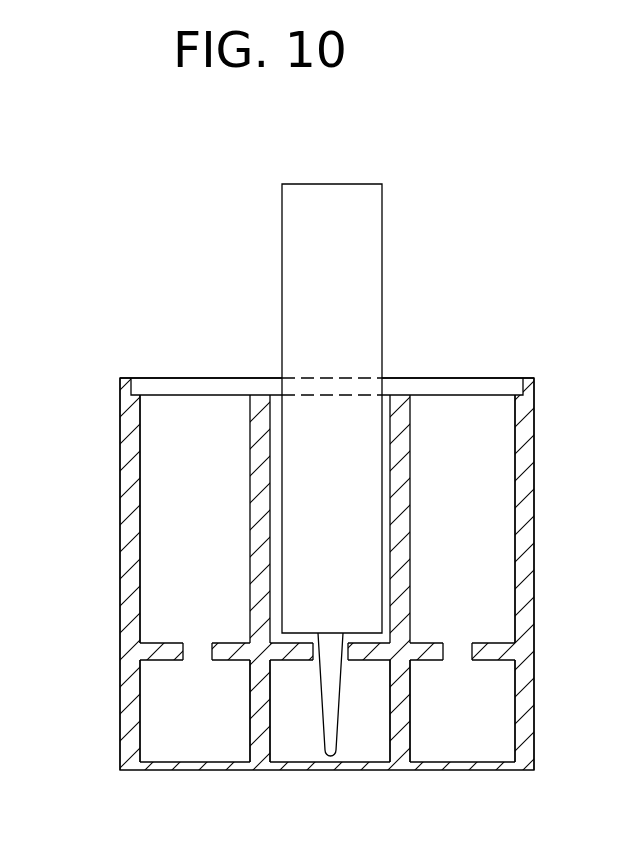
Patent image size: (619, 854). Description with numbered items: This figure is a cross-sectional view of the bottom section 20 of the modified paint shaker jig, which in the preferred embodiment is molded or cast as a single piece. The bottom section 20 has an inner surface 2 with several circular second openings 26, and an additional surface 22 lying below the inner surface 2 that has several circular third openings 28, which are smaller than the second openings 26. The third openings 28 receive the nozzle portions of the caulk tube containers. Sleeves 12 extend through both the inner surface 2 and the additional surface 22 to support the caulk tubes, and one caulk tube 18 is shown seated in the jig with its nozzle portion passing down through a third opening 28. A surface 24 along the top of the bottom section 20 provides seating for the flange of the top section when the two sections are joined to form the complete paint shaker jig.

The inner surface 2 is at (182, 758).
The sleeves 12 is at (133, 503).
The caulk tube 18 is at (282, 270).
The bottom section 20 is at (108, 533).
The additional surface 22 is at (157, 652).
The surface 24 is at (151, 394).
The second openings 26 is at (133, 433).
The third openings 28 is at (210, 657).